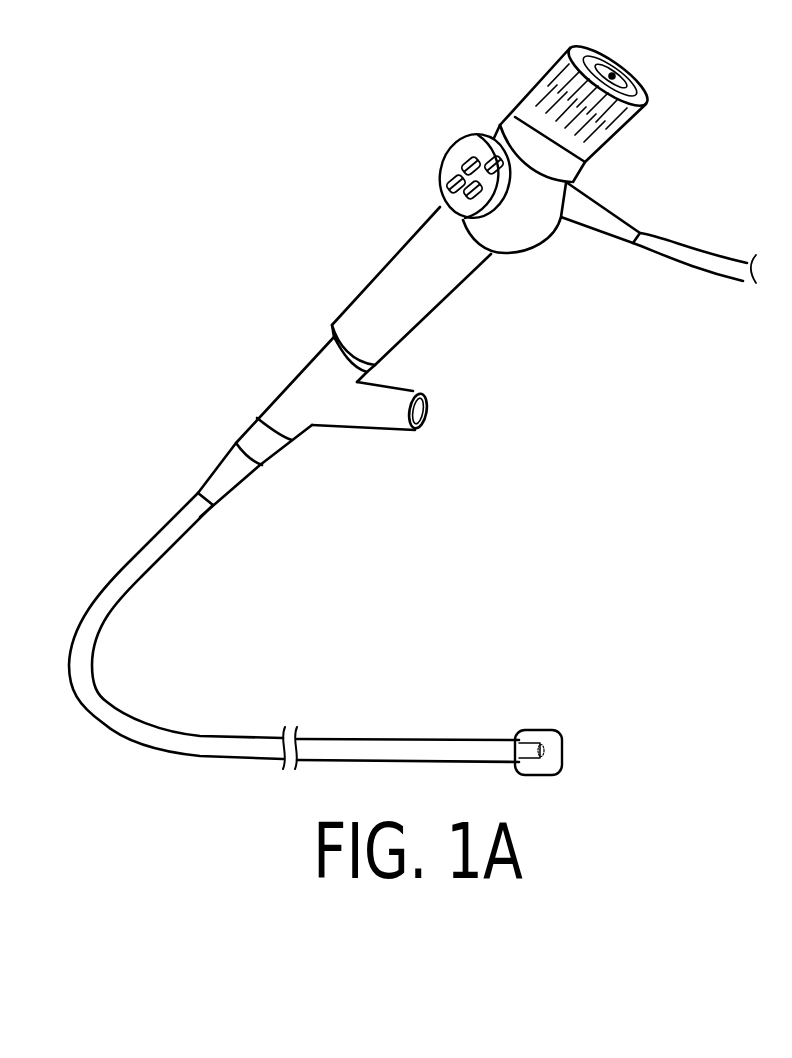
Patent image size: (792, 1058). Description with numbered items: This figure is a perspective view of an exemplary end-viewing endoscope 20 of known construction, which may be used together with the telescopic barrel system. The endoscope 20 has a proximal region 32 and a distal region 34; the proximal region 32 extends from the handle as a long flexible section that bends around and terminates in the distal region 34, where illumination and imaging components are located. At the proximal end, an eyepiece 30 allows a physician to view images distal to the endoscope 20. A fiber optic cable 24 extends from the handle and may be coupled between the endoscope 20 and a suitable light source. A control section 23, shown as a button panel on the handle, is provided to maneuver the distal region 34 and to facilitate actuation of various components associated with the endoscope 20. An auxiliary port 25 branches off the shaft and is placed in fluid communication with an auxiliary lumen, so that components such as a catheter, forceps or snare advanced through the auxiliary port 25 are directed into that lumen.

The endoscope 20 is at (346, 273).
The control section 23 is at (453, 169).
The fiber optic cable 24 is at (695, 264).
The auxiliary port 25 is at (398, 434).
The eyepiece 30 is at (614, 77).
The proximal region 32 is at (183, 501).
The distal region 34 is at (516, 736).